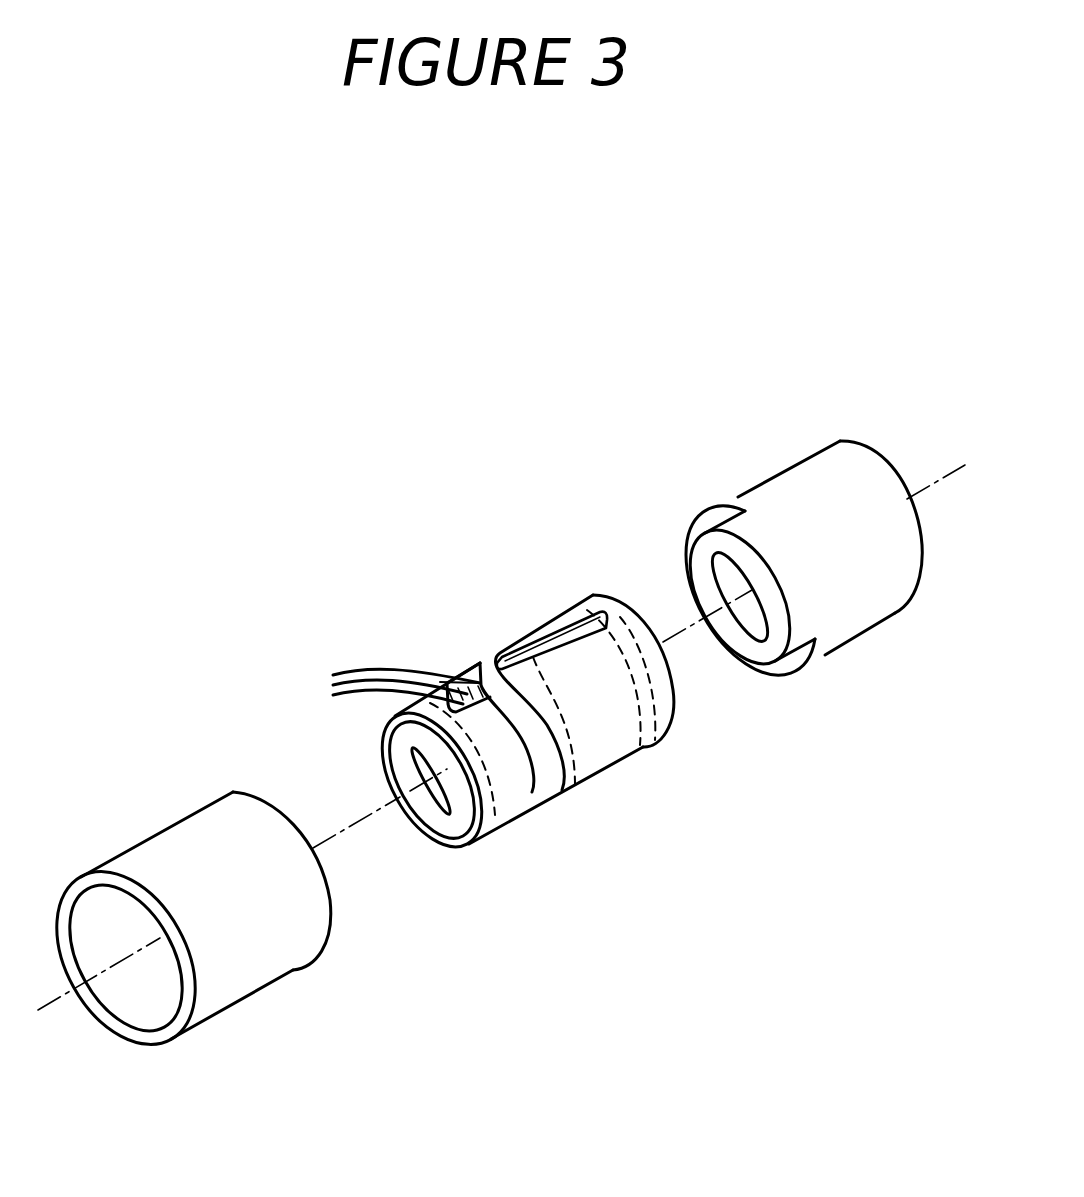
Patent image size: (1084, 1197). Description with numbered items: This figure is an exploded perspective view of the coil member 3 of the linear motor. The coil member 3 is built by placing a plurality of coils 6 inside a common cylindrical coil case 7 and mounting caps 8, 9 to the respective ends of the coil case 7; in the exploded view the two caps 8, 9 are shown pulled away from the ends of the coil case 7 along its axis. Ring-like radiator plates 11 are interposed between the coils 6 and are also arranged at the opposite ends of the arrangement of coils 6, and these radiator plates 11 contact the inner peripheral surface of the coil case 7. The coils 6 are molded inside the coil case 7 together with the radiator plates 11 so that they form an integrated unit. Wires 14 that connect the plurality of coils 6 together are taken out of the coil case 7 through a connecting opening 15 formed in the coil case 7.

The coil member 3 is at (525, 614).
The coils 6 is at (605, 737).
The coil case 7 is at (480, 817).
The cap 8 is at (787, 470).
The cap 9 is at (145, 855).
The radiator plates 11 is at (453, 827).
The wires 14 is at (387, 687).
The connecting opening 15 is at (575, 645).